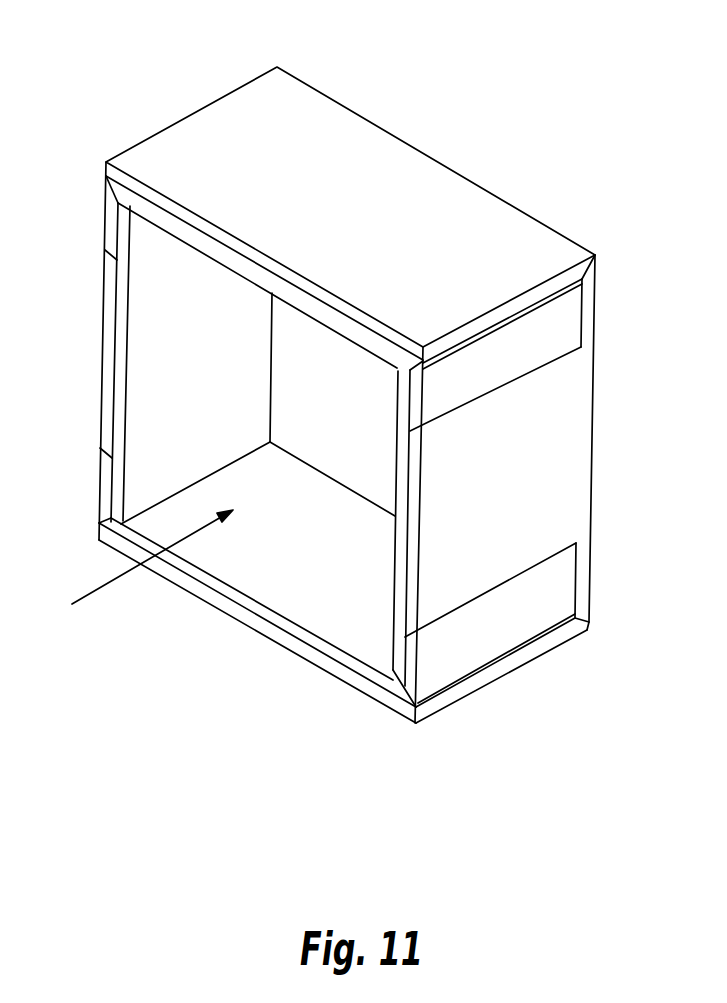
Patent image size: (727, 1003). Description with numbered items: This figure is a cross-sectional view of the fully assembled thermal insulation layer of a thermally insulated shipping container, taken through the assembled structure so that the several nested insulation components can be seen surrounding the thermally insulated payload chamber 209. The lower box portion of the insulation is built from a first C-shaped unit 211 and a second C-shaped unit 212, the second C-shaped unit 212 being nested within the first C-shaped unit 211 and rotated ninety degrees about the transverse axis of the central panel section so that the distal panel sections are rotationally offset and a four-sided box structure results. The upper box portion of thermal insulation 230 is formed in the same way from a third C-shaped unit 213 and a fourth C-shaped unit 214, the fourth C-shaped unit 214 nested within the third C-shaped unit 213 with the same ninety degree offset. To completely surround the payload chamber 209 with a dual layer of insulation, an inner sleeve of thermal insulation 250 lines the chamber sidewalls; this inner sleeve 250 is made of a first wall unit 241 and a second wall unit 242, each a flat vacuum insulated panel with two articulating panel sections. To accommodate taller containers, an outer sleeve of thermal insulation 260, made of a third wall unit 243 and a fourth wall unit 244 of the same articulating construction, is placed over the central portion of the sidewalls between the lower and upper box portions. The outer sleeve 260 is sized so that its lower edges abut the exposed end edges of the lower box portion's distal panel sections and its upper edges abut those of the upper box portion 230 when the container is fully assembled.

The upper box portion of thermal insulation 230 is at (553, 58).
The third C-shaped unit 213 is at (508, 229).
The fourth C-shaped unit 214 is at (110, 214).
The second C-shaped unit 212 is at (110, 487).
The first C-shaped unit 211 is at (594, 578).
The third wall unit 243 is at (567, 459).
The outer sleeve of thermal insulation 260 is at (567, 512).
The inner sleeve of thermal insulation 250 is at (364, 421).
The first wall unit 241 is at (152, 313).
The second wall unit 242 is at (297, 370).
The fourth wall unit 244 is at (107, 417).
The thermally insulated payload chamber 209 is at (145, 580).